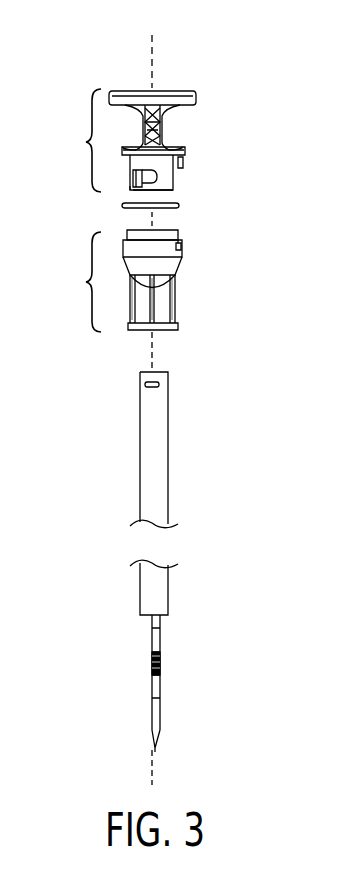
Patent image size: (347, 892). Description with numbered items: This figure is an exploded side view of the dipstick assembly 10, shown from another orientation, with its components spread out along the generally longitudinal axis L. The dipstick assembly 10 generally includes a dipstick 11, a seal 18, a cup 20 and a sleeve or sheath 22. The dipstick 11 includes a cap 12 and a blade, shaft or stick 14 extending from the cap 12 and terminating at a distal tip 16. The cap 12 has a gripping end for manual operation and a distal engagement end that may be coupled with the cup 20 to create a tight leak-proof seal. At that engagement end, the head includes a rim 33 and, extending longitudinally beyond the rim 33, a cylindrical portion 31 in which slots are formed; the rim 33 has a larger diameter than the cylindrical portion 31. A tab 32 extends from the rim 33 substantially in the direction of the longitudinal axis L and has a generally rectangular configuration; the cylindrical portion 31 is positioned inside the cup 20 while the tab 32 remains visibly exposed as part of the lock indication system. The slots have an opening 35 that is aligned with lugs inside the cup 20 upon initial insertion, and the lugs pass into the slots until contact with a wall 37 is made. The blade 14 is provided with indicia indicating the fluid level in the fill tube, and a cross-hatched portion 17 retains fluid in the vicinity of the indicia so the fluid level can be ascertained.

The dipstick assembly 10 is at (228, 127).
The dipstick 11 is at (131, 84).
The cap 12 is at (86, 142).
The blade, shaft or stick 14 is at (161, 624).
The distal tip 16 is at (161, 703).
The cross-hatched portion 17 is at (152, 661).
The seal 18 is at (128, 207).
The cup 20 is at (86, 282).
The sleeve or sheath 22 is at (168, 441).
The cylindrical portion 31 is at (152, 164).
The tab 32 is at (184, 165).
The rim 33 is at (180, 138).
The opening 35 is at (147, 192).
The wall 37 is at (170, 180).
The longitudinal axis L is at (156, 54).